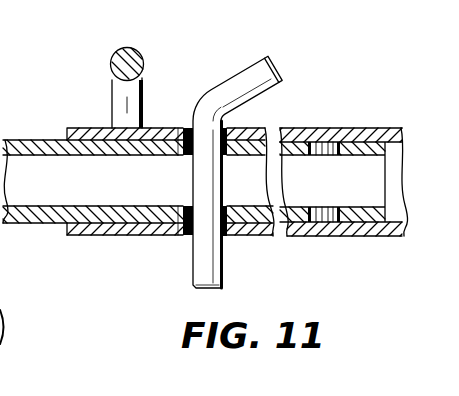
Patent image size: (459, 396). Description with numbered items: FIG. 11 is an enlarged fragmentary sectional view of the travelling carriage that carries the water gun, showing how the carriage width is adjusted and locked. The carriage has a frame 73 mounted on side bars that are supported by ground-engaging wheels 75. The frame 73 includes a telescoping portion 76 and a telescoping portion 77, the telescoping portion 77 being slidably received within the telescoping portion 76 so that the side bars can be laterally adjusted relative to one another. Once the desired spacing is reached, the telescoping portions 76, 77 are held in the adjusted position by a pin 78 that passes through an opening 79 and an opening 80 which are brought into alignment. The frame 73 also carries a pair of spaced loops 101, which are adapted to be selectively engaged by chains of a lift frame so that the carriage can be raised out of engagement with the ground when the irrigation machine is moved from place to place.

The frame 73 is at (360, 124).
The ground-engaging wheels 75 is at (3, 298).
The telescoping portion 76 is at (83, 129).
The telescoping portion 77 is at (31, 139).
The pin 78 is at (228, 82).
The opening 79 is at (181, 128).
The opening 80 is at (182, 157).
The loops 101 is at (128, 48).